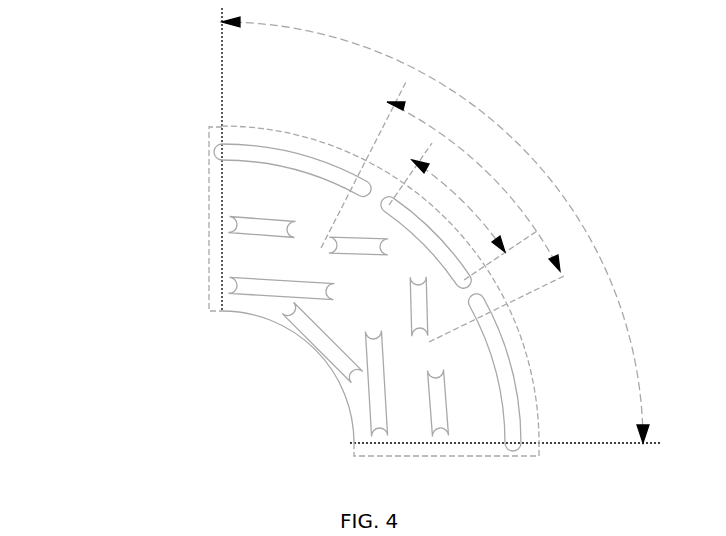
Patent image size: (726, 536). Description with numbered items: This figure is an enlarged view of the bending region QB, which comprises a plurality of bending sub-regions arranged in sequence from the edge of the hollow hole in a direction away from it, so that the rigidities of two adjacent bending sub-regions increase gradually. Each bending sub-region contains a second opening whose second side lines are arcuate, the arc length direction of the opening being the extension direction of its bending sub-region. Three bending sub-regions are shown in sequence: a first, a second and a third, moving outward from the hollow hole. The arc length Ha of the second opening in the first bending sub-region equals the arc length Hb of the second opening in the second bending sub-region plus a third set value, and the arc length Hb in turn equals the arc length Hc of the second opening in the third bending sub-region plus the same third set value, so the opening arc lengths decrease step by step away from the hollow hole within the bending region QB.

The bending region QB is at (660, 240).
The arc length of the second opening in the first bending sub-region Ha is at (463, 211).
The arc length of the second opening in the second bending sub-region Hb is at (442, 211).
The arc length of the second opening in the third bending sub-region Hc is at (435, 230).